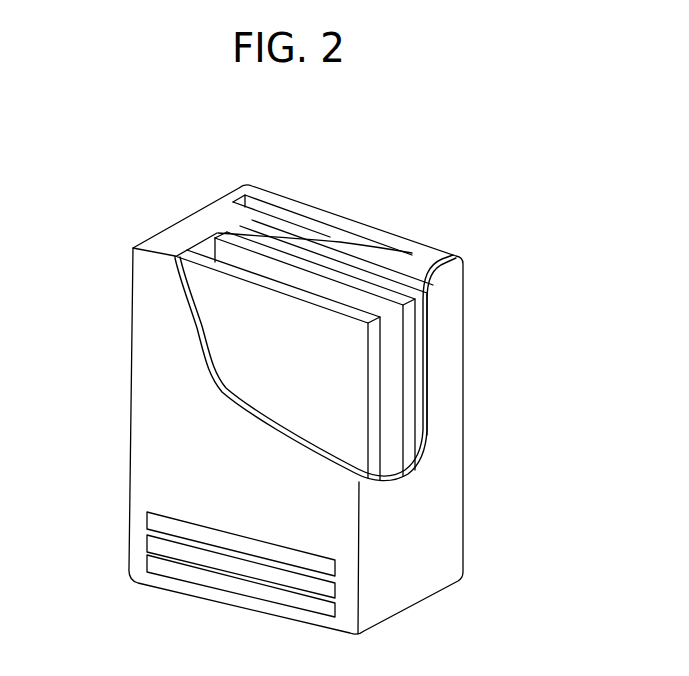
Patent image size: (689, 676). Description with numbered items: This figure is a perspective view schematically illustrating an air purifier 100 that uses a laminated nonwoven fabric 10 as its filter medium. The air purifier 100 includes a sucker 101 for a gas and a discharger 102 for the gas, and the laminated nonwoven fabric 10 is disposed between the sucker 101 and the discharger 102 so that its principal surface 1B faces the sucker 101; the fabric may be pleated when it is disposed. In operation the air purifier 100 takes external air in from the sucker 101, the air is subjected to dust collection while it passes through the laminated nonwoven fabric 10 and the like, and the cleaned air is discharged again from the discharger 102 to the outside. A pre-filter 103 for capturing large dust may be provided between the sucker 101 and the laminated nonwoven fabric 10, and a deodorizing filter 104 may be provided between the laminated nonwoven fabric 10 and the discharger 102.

The air purifier 100 is at (407, 153).
The sucker 101 is at (112, 506).
The discharger 102 is at (266, 214).
The pre-filter 103 is at (235, 343).
The deodorizing filter 104 is at (438, 308).
The laminated nonwoven fabric 10 is at (220, 243).
The principal surface 1B is at (389, 357).